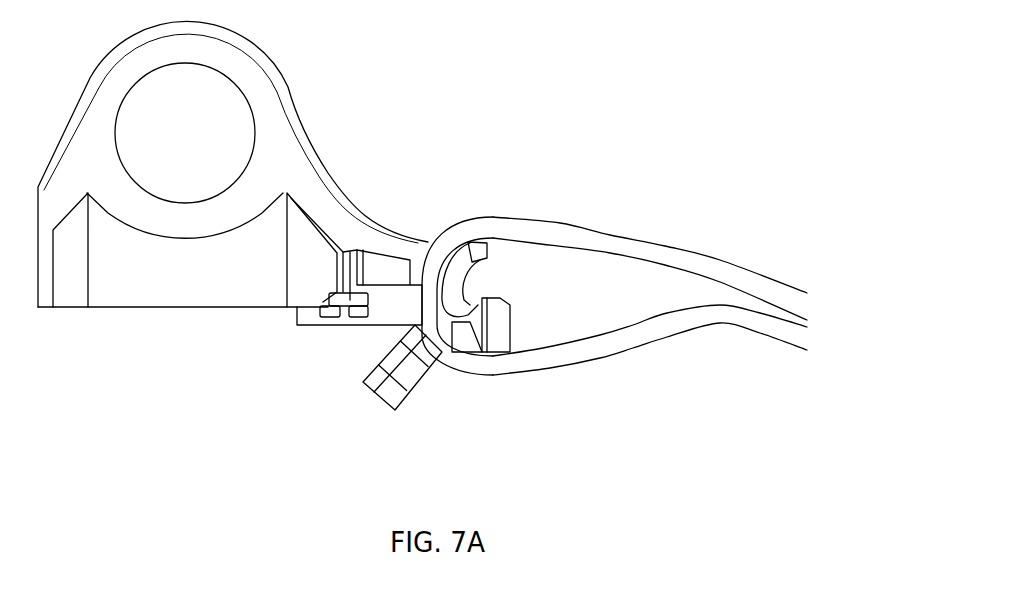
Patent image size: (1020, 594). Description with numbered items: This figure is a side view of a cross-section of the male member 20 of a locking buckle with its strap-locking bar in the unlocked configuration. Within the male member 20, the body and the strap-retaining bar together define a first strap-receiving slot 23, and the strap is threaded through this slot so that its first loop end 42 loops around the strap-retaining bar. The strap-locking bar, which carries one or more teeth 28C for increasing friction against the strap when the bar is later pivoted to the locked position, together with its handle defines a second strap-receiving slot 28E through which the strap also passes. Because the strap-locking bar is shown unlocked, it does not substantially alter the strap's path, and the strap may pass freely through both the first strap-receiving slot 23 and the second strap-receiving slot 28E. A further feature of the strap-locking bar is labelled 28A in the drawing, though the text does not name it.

The male member 20 is at (283, 167).
The first strap-receiving slot 23 is at (459, 208).
The first loop end 42 is at (597, 242).
The teeth 28C is at (455, 306).
The pivot pin 28A is at (473, 307).
The second strap-receiving slot 28E is at (445, 380).